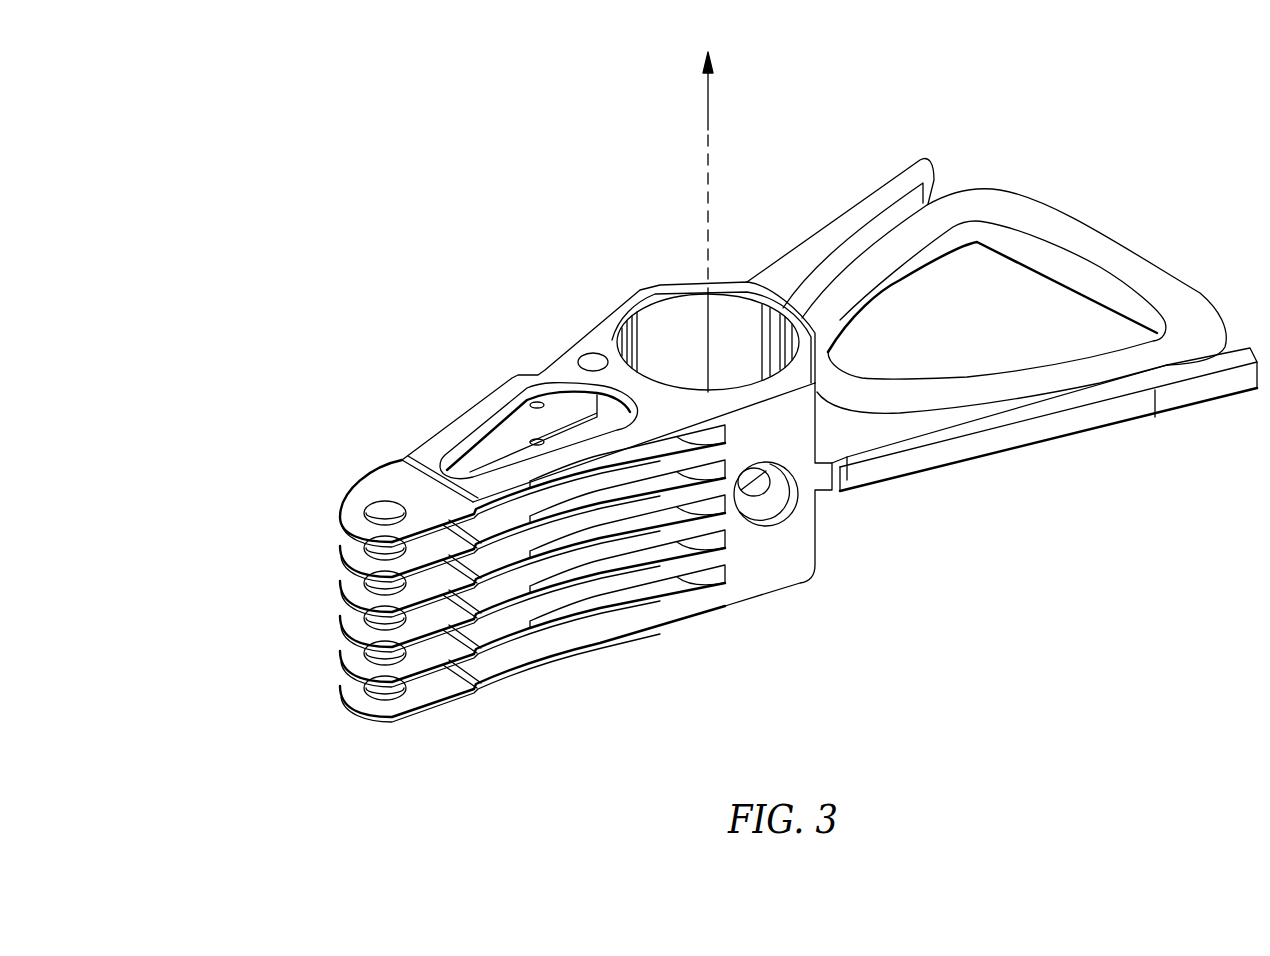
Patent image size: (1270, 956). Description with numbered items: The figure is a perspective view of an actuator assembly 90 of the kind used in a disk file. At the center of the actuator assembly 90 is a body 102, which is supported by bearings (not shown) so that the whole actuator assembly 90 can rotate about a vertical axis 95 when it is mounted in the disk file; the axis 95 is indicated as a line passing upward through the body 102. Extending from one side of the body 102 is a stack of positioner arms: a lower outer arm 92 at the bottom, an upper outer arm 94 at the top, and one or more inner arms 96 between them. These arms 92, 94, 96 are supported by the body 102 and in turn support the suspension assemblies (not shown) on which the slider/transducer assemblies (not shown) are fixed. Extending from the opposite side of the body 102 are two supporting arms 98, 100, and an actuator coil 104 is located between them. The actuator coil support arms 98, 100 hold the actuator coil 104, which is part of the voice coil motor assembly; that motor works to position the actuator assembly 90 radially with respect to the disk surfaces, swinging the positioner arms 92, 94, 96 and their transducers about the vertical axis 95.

The actuator assembly 90 is at (742, 402).
The lower outer arm 92 is at (433, 713).
The upper outer arm 94 is at (368, 481).
The vertical axis 95 is at (711, 118).
The inner arms 96 is at (344, 665).
The supporting arm 98 is at (933, 184).
The supporting arm 100 is at (1213, 410).
The body 102 is at (818, 548).
The actuator coil 104 is at (1110, 262).